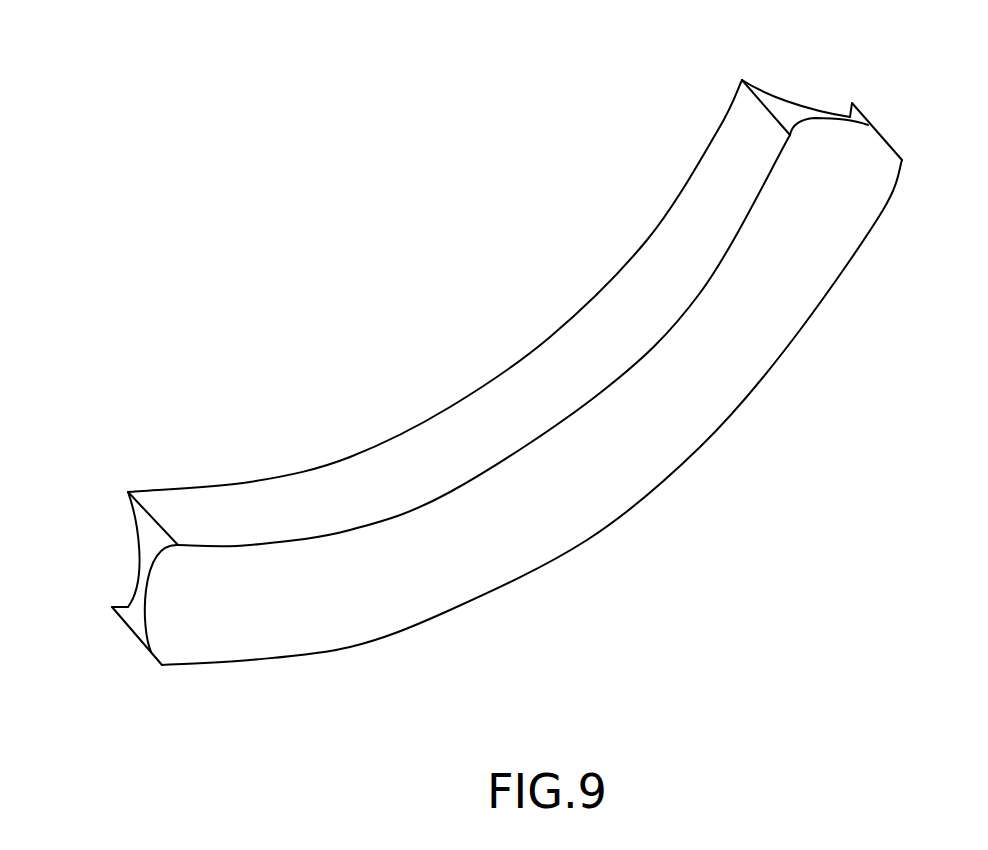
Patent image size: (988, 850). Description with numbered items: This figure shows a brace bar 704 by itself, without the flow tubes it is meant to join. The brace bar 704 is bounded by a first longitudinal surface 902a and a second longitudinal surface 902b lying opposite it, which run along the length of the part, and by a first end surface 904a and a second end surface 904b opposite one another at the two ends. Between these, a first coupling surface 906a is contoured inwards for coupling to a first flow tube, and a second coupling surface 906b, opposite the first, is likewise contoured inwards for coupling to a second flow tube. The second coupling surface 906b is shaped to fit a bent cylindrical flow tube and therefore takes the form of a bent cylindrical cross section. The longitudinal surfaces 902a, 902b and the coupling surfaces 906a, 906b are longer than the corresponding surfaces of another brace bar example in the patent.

The brace bar 704 is at (466, 373).
The first longitudinal surface 902a is at (552, 357).
The second longitudinal surface 902b is at (488, 618).
The first end surface 904a is at (118, 612).
The second end surface 904b is at (834, 117).
The first coupling surface 906a is at (120, 544).
The second coupling surface 906b is at (608, 486).